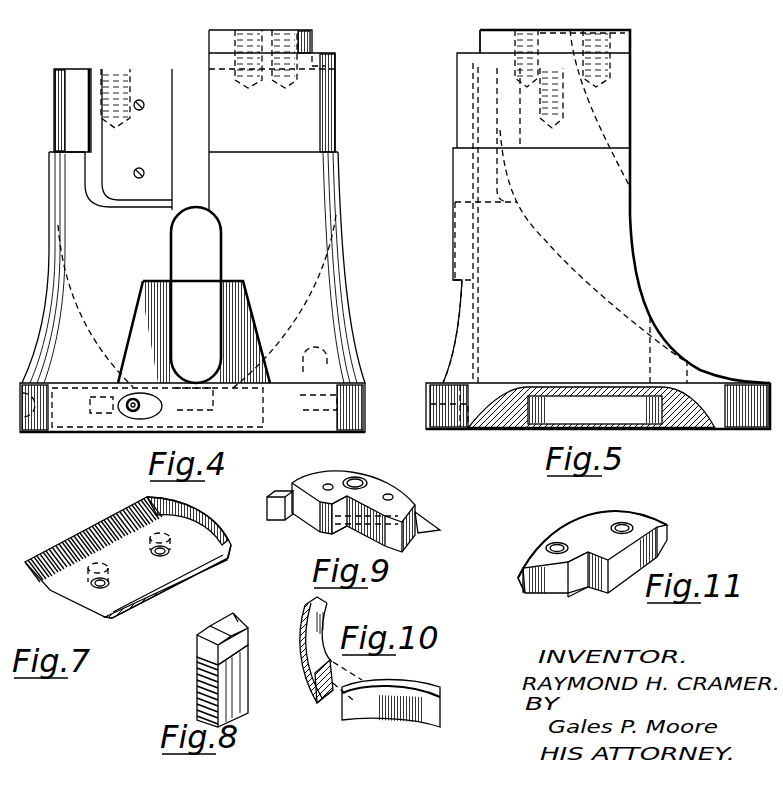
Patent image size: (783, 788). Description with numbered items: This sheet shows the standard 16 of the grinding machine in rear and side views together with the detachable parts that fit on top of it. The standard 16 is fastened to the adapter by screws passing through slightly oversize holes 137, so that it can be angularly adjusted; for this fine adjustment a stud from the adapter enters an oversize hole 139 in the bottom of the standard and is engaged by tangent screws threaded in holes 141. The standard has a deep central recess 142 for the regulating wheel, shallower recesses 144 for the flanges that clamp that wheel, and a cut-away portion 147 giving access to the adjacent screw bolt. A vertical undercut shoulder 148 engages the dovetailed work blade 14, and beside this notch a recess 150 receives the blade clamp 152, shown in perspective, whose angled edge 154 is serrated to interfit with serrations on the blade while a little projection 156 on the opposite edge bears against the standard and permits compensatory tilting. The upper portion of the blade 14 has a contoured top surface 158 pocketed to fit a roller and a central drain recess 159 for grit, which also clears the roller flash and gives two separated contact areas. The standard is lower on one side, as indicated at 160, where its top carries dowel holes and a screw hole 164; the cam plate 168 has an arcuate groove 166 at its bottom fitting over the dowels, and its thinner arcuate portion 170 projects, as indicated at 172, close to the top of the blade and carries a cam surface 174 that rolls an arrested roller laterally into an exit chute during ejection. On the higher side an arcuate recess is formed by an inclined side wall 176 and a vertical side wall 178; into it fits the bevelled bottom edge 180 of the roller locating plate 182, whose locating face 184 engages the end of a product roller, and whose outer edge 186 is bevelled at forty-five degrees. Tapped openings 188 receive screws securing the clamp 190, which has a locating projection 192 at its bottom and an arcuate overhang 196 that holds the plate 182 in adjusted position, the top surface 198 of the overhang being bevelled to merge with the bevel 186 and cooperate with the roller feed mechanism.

In FIG. 8, the work blade 14 is at (250, 657).
In FIG. 4, the standard 16 is at (272, 229).
In FIG. 5, the standard 16 is at (522, 261).
In FIG. 4, the holes 137 is at (300, 425).
In FIG. 5, the holes 137 is at (452, 430).
In FIG. 4, the oversize hole 139 is at (73, 395).
In FIG. 4, the holes 141 is at (128, 409).
In FIG. 5, the deep central recess 142 is at (565, 265).
In FIG. 5, the shallower recesses 144 is at (592, 128).
In FIG. 4, the cut-away portion 147 is at (169, 342).
In FIG. 5, the cut-away portion 147 is at (472, 328).
In FIG. 4, the vertical undercut shoulder 148 is at (178, 78).
In FIG. 4, the recess 150 is at (107, 160).
In FIG. 7, the blade clamp 152 is at (154, 578).
In FIG. 7, the angled edge 154 is at (88, 534).
In FIG. 7, the projection 156 is at (185, 578).
In FIG. 8, the top surface 158 is at (233, 627).
In FIG. 8, the central drain recess 159 is at (229, 609).
In FIG. 4, the lower side 160 is at (72, 68).
In FIG. 5, the lower side 160 is at (618, 62).
In FIG. 4, the screw hole 164 is at (115, 68).
In FIG. 5, the screw hole 164 is at (558, 109).
In FIG. 9, the arcuate groove 166 is at (310, 520).
In FIG. 9, the cam plate 168 is at (400, 494).
In FIG. 9, the thinner arcuate portion 170 is at (291, 491).
In FIG. 9, the projection 172 is at (272, 519).
In FIG. 9, the cam surface 174 is at (432, 520).
In FIG. 4, the side wall 176 is at (320, 53).
In FIG. 5, the side wall 176 is at (478, 65).
In FIG. 4, the vertical side wall 178 is at (313, 38).
In FIG. 5, the vertical side wall 178 is at (482, 40).
In FIG. 10, the bevelled bottom edge 180 is at (326, 706).
In FIG. 10, the roller locating plate 182 is at (338, 661).
In FIG. 10, the locating face 184 is at (328, 610).
In FIG. 10, the outer edge 186 is at (318, 677).
In FIG. 4, the tapped openings 188 is at (283, 30).
In FIG. 5, the tapped openings 188 is at (556, 28).
In FIG. 11, the clamp 190 is at (578, 532).
In FIG. 11, the locating projection 192 is at (562, 597).
In FIG. 11, the arcuate overhang 196 is at (521, 582).
In FIG. 11, the top surface 198 is at (538, 552).